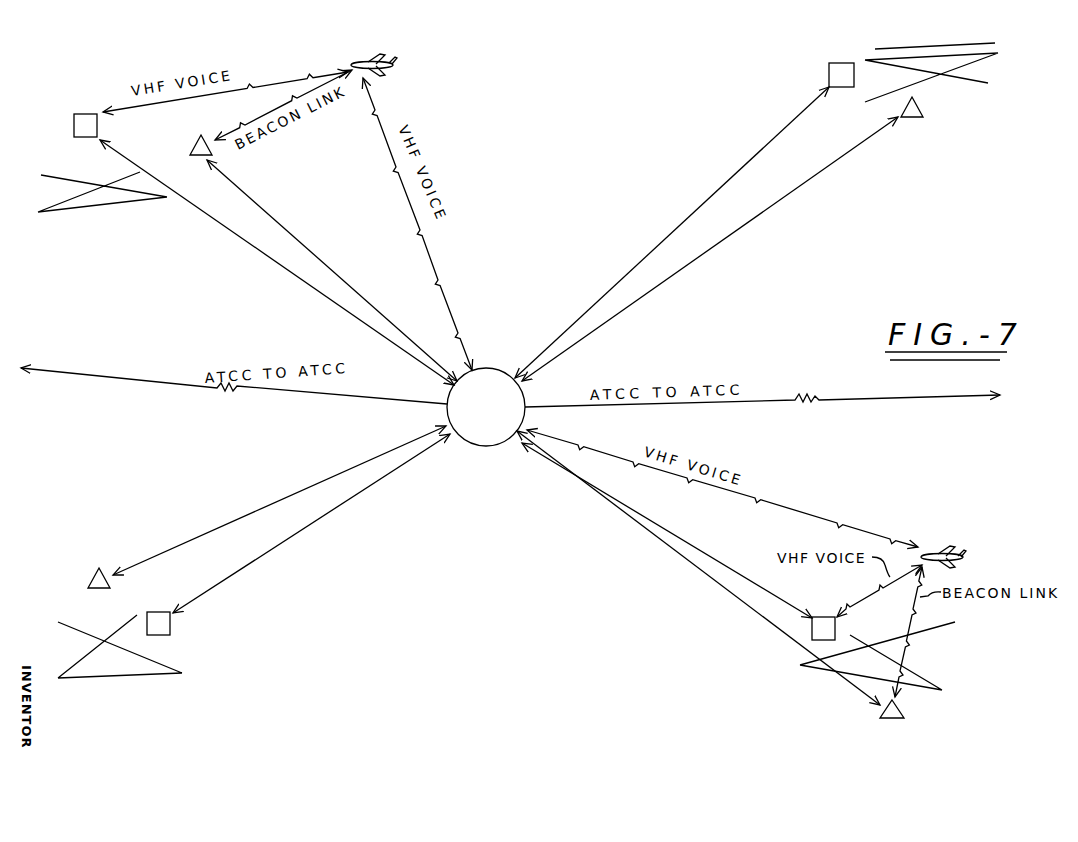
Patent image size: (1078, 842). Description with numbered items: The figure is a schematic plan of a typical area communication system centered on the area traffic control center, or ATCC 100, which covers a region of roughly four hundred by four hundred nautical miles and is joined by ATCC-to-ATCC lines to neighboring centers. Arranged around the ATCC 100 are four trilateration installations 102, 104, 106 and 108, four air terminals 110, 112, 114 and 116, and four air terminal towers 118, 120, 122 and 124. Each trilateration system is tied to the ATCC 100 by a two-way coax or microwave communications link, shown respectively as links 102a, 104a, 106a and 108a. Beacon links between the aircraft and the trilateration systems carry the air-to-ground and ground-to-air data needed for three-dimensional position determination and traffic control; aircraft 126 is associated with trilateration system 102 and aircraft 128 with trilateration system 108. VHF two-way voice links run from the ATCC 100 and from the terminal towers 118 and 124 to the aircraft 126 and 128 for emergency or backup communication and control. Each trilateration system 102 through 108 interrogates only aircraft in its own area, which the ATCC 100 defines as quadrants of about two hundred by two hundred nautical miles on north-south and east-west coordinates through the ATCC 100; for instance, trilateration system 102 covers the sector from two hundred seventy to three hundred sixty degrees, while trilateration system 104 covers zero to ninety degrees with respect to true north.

The area traffic control center (ATCC) 100 is at (488, 384).
The trilateration installation 102 is at (193, 148).
The communications link 102a is at (275, 221).
The trilateration installation 104 is at (924, 104).
The communications link 104a is at (638, 300).
The trilateration installation 106 is at (90, 578).
The communications link 106a is at (278, 500).
The trilateration installation 108 is at (903, 708).
The communications link 108a is at (692, 569).
The air terminal 110 is at (82, 208).
The air terminal 112 is at (963, 53).
The air terminal 114 is at (145, 675).
The air terminal 116 is at (805, 663).
The air terminal tower 118 is at (74, 138).
The air terminal tower 120 is at (848, 44).
The air terminal tower 122 is at (147, 635).
The air terminal tower 124 is at (812, 617).
The aircraft 126 is at (372, 56).
The aircraft 128 is at (944, 548).